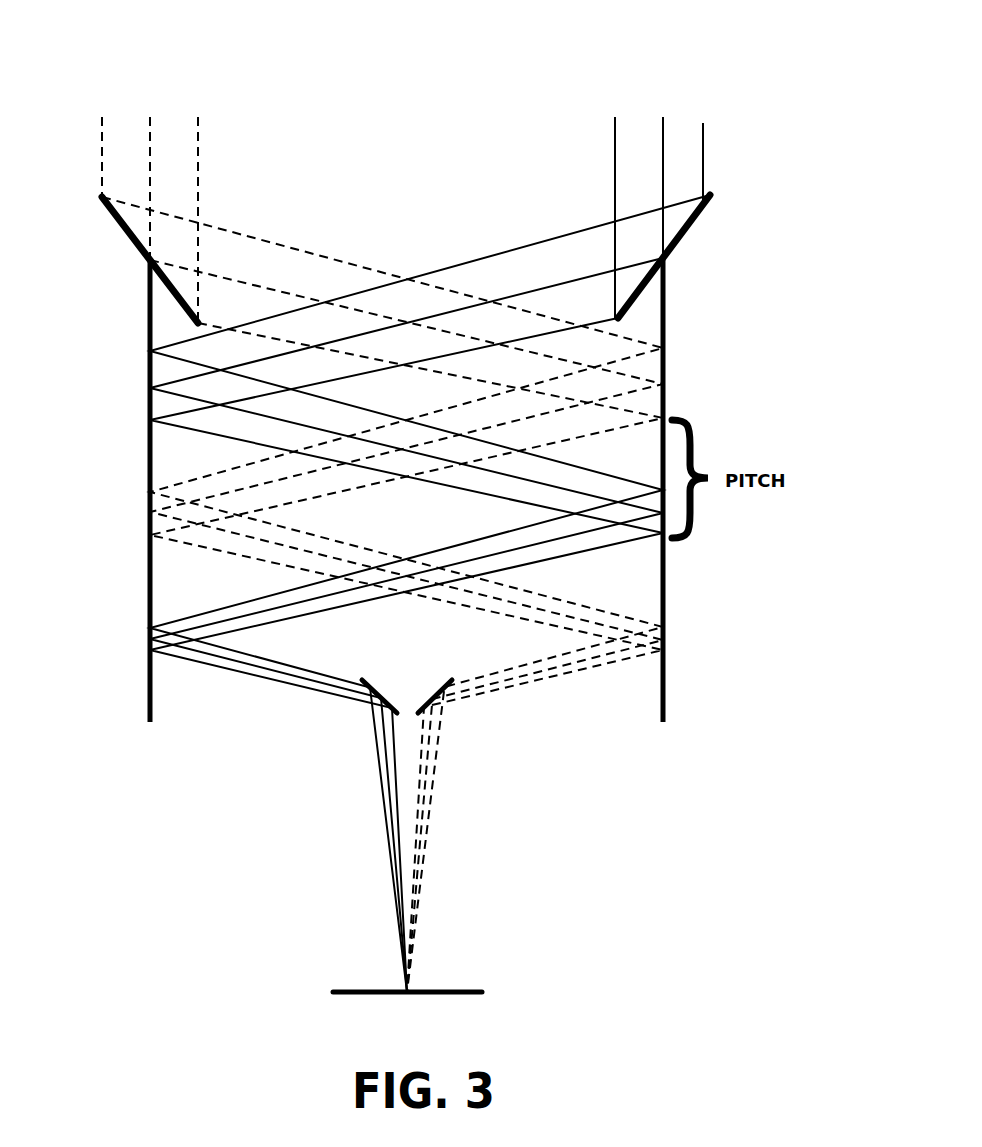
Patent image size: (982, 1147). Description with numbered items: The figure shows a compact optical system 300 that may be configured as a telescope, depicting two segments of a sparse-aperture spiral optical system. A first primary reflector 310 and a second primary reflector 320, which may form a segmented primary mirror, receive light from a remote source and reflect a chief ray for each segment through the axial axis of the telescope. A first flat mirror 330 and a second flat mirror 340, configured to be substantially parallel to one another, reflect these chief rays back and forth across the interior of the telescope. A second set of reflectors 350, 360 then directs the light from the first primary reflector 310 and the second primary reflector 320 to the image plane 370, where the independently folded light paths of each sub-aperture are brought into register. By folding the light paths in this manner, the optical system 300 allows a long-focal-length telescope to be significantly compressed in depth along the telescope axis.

The compact optical system 300 is at (778, 98).
The first primary reflector 310 is at (134, 243).
The second primary reflector 320 is at (680, 243).
The first flat mirror 330 is at (150, 505).
The second flat mirror 340 is at (663, 358).
The second set reflector 350 is at (372, 686).
The second set reflector 360 is at (426, 692).
The image plane 370 is at (477, 990).